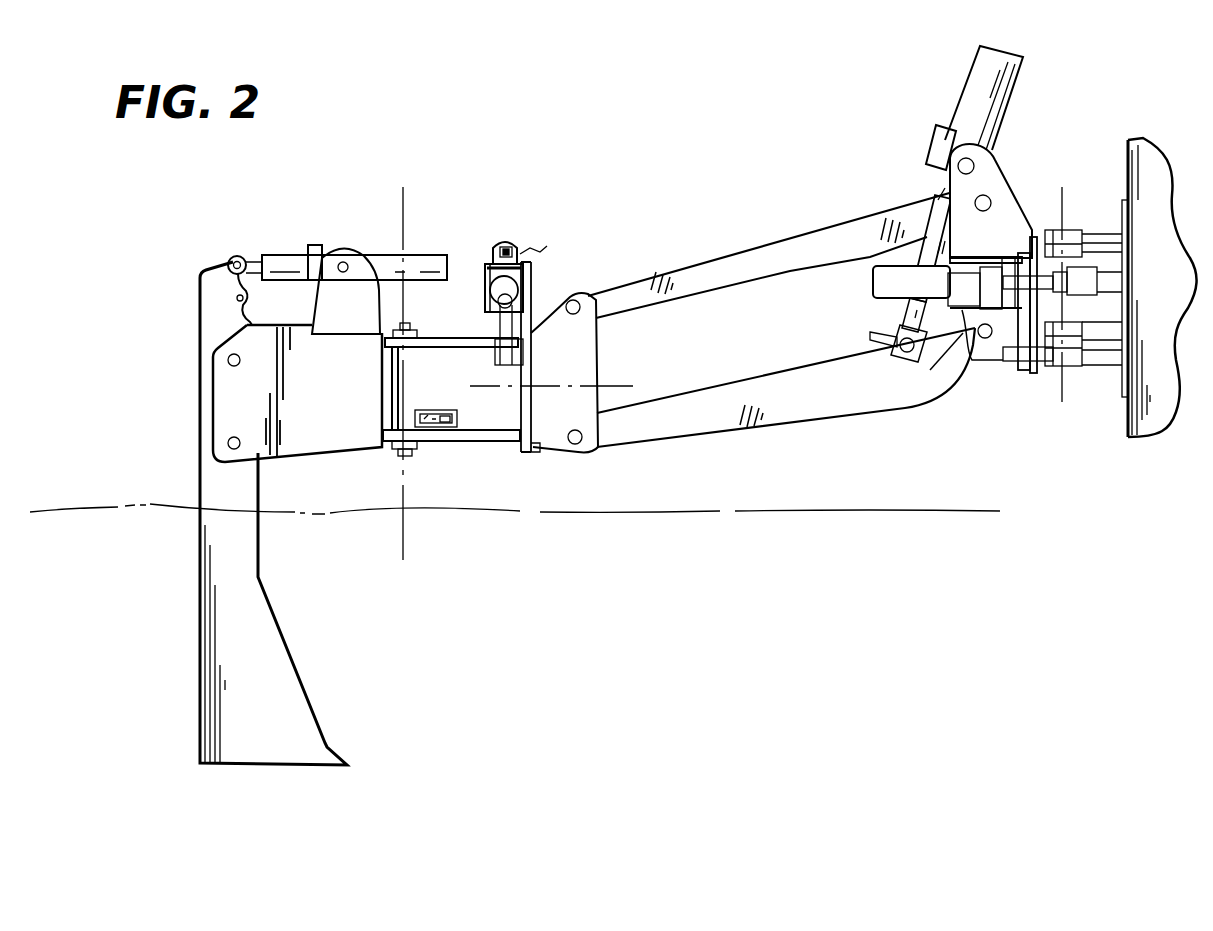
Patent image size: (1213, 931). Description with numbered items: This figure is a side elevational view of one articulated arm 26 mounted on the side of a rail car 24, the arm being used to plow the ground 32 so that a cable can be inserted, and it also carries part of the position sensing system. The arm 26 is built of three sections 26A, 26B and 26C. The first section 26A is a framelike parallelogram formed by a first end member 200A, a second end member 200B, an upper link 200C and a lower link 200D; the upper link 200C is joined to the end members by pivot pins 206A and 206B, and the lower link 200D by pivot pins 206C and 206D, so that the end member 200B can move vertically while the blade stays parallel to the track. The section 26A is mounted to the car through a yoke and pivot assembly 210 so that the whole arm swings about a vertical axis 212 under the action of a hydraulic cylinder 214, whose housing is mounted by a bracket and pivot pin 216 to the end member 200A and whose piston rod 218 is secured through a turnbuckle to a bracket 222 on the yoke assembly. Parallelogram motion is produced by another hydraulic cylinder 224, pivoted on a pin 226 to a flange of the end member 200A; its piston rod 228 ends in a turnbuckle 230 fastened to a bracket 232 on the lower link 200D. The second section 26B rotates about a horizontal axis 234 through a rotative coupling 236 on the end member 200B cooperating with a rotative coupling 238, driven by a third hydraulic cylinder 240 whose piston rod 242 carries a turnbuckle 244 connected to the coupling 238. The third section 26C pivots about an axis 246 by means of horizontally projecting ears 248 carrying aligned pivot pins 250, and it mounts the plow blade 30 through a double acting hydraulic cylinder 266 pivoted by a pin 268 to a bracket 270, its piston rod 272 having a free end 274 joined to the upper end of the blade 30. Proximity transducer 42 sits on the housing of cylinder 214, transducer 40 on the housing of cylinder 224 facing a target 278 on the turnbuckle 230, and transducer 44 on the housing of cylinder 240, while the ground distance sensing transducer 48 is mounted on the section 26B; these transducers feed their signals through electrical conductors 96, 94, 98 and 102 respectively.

The rail car 24 is at (1190, 145).
The articulated arm 26 is at (793, 238).
The first arm section 26A is at (717, 260).
The second arm section 26B is at (490, 438).
The third arm section 26C is at (285, 432).
The plow blade 30 is at (296, 672).
The ground 32 is at (760, 560).
The proximity transducer 40 is at (930, 140).
The proximity transducer 42 is at (941, 362).
The proximity transducer 44 is at (519, 250).
The ground distance sensing proximity transducer 48 is at (427, 417).
The electrical conductor 94 is at (977, 138).
The electrical conductor 96 is at (940, 268).
The electrical conductor 98 is at (555, 244).
The electrical conductor 102 is at (470, 414).
The first end member 200A is at (1013, 210).
The second end member 200B is at (761, 289).
The upper link 200C is at (750, 275).
The lower link 200D is at (696, 396).
The pivot pin 206A is at (989, 197).
The pivot pin 206B is at (573, 299).
The pivot pin 206C is at (992, 339).
The pivot pin 206D is at (582, 444).
The yoke and pivot assembly 210 is at (1100, 213).
The vertical axis 212 is at (1064, 392).
The hydraulic cylinder 214 is at (872, 290).
The bracket and pivot pin 216 is at (972, 365).
The piston rod 218 is at (1018, 258).
The bracket 222 is at (1108, 284).
The hydraulic cylinder 224 is at (1005, 65).
The pin 226 is at (957, 168).
The piston rod 228 is at (918, 252).
The turnbuckle 230 is at (903, 324).
The bracket 232 is at (903, 362).
The horizontal axis 234 is at (613, 386).
The rotative coupling 236 is at (528, 420).
The rotative coupling 238 is at (518, 420).
The hydraulic cylinder 240 is at (503, 246).
The piston rod 242 is at (487, 295).
The turnbuckle 244 is at (494, 350).
The pivot axis 246 is at (405, 205).
The ears 248 is at (425, 328).
The pivot pins 250 is at (400, 458).
The hydraulic cylinder 266 is at (382, 252).
The pin 268 is at (350, 242).
The bracket 270 is at (326, 306).
The piston rod 272 is at (257, 258).
The free end 274 is at (232, 258).
The target 278 is at (868, 340).